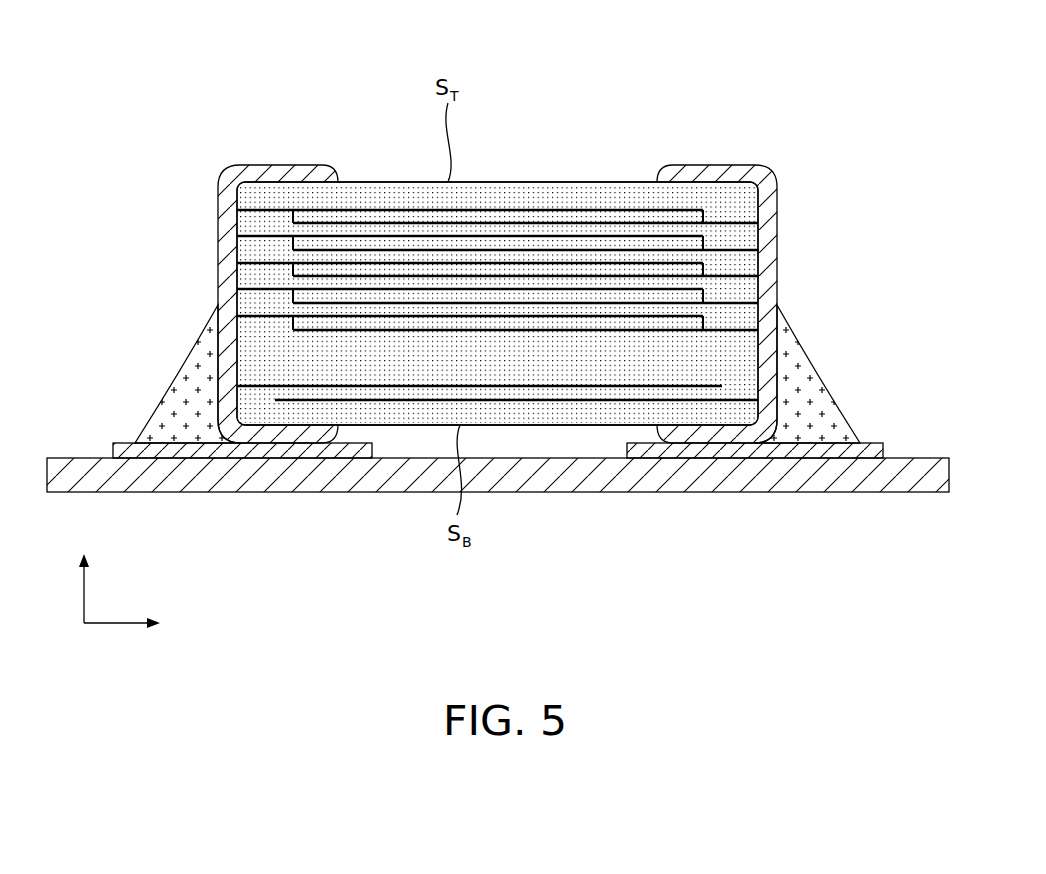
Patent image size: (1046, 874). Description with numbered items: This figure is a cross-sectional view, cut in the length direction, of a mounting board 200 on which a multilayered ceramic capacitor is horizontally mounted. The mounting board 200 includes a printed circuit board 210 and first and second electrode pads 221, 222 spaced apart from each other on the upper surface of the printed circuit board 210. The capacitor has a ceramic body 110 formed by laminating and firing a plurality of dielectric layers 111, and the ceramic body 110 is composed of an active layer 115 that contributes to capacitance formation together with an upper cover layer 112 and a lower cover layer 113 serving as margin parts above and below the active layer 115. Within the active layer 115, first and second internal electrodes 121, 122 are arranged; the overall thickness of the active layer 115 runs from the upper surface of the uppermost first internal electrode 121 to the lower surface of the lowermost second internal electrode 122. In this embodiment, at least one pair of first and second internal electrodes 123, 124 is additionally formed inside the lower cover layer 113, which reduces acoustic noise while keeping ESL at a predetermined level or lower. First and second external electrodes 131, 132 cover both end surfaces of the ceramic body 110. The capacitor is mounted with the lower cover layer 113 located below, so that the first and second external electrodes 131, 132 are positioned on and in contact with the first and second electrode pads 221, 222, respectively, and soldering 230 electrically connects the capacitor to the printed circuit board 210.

The mounting board 200 is at (520, 27).
The ceramic body 110 is at (598, 174).
The dielectric layer 111 is at (692, 298).
The upper cover layer 112 is at (530, 182).
The lower cover layer 113 is at (530, 422).
The active layer 115 is at (714, 258).
The first internal electrode 121 is at (366, 210).
The second internal electrode 122 is at (706, 215).
The first internal electrode 123 is at (580, 387).
The second internal electrode 124 is at (637, 400).
The first external electrode 131 is at (283, 165).
The second external electrode 132 is at (717, 165).
The printed circuit board 210 is at (845, 492).
The first electrode pad 221 is at (128, 451).
The second electrode pad 222 is at (870, 450).
The soldering 230 is at (187, 413).